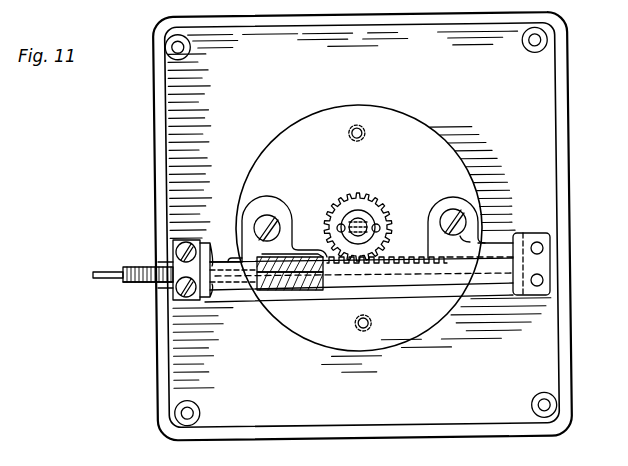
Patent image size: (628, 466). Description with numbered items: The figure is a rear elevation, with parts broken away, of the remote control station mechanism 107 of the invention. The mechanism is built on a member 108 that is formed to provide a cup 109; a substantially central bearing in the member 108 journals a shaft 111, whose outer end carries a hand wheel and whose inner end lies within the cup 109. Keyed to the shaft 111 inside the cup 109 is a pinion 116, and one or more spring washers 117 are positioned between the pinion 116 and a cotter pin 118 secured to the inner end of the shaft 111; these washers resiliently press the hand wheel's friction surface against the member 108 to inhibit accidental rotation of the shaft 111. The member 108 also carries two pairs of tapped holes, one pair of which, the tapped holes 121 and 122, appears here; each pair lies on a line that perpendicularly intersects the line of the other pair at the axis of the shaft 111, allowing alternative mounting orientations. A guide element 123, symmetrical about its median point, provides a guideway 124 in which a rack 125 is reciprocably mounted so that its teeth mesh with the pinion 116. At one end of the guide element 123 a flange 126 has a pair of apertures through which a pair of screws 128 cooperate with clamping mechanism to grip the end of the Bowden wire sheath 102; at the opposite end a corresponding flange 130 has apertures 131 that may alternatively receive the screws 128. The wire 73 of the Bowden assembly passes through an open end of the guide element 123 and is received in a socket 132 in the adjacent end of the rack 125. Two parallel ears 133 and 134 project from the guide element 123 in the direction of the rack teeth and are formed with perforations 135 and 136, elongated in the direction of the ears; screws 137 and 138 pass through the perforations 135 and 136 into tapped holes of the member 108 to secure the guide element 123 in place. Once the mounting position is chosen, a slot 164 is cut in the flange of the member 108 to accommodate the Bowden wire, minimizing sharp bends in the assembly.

The wire 73 is at (100, 271).
The Bowden wire sheath 102 is at (143, 266).
The remote control station mechanism 107 is at (144, 385).
The member 108 is at (571, 150).
The cup 109 is at (361, 226).
The shaft 111 is at (358, 206).
The pinion 116 is at (370, 215).
The spring washers 117 is at (356, 210).
The cotter pin 118 is at (380, 230).
The tapped hole 121 is at (364, 129).
The tapped hole 122 is at (370, 324).
The guide element 123 is at (344, 294).
The guideway 124 is at (261, 292).
The rack 125 is at (309, 292).
The flange 126 is at (165, 230).
The screws 128 is at (200, 242).
The flange 130 is at (533, 233).
The apertures 131 is at (544, 280).
The socket 132 is at (290, 292).
The ear 133 is at (447, 196).
The ear 134 is at (267, 196).
The perforation 135 is at (455, 238).
The perforation 136 is at (244, 250).
The screw 137 is at (446, 214).
The screw 138 is at (292, 225).
The slot 164 is at (158, 284).